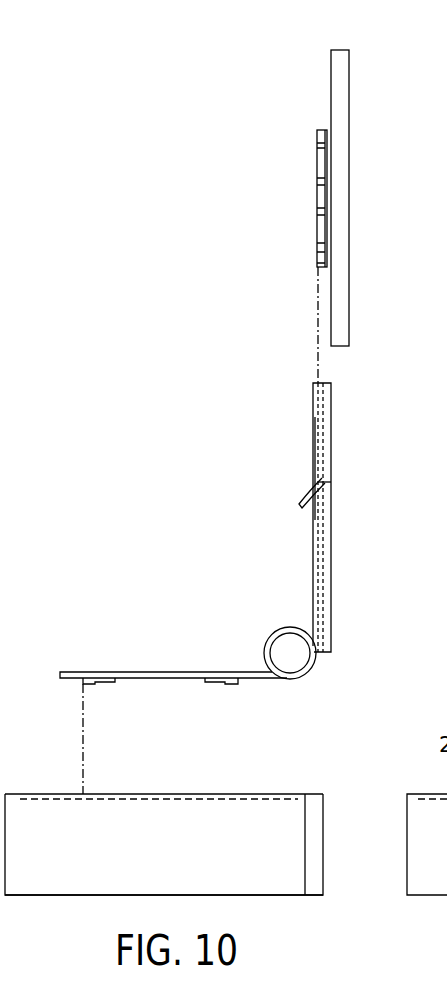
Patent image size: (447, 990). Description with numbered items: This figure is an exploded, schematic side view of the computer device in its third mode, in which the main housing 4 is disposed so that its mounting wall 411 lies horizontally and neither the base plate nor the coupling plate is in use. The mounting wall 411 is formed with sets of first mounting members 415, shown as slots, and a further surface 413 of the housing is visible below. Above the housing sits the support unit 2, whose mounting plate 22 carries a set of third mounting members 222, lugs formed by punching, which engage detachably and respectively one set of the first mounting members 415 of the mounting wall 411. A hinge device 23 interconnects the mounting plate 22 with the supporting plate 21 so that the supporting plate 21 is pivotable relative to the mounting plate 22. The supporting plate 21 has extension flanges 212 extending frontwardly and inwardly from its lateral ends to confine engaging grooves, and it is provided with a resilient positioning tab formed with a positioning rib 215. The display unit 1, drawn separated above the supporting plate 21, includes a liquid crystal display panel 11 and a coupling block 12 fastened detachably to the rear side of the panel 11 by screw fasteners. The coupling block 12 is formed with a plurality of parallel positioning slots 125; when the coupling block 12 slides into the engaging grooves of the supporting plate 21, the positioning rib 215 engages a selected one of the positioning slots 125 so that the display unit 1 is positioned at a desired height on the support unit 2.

The display unit 1 is at (366, 65).
The liquid crystal display panel 11 is at (338, 113).
The coupling block 12 is at (317, 140).
The positioning slots 125 is at (316, 246).
The support unit 2 is at (230, 559).
The supporting plate 21 is at (328, 403).
The extension flanges 212 is at (331, 437).
The positioning rib 215 is at (334, 484).
The mounting plate 22 is at (110, 672).
The third mounting members 222 is at (89, 684).
The hinge device 23 is at (277, 643).
The main housing 4 is at (287, 789).
The mounting wall 411 is at (50, 794).
The base bottom surface 413 is at (80, 895).
The first mounting members 415 is at (98, 794).